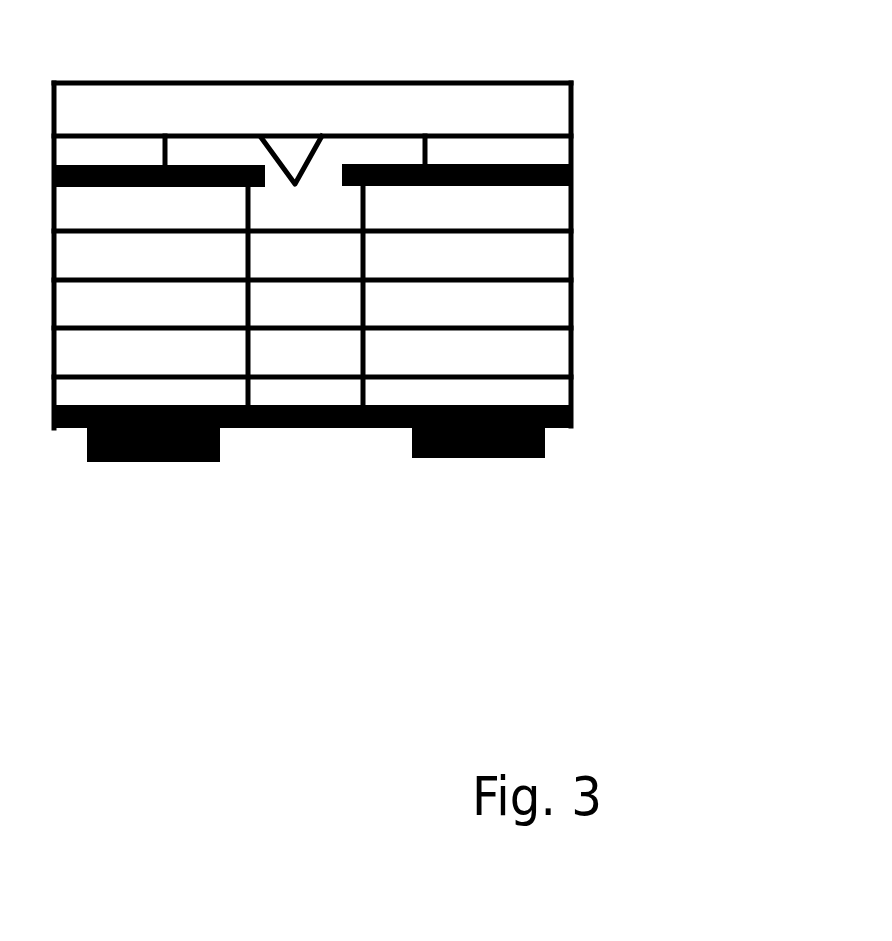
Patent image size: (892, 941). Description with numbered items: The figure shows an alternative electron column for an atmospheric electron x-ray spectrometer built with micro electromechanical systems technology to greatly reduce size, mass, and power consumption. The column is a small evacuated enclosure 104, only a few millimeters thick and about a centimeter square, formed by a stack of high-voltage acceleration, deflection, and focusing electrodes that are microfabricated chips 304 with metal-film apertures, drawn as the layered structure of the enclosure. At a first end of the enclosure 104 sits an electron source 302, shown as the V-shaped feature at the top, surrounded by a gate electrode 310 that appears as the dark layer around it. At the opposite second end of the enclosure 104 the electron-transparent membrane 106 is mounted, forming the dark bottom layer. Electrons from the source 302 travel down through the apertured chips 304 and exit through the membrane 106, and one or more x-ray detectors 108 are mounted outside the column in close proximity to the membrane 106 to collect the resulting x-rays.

The electron source 302 is at (488, 101).
The gate electrode 310 is at (400, 169).
The microfabricated chips 304 is at (401, 304).
The evacuated enclosure 104 is at (498, 296).
The electron-transparent membrane 106 is at (390, 434).
The x-ray detectors 108 is at (408, 486).